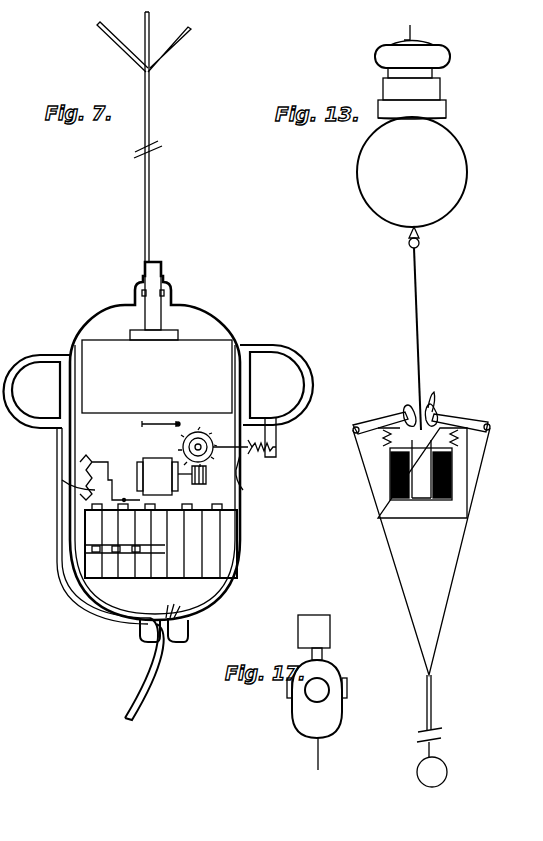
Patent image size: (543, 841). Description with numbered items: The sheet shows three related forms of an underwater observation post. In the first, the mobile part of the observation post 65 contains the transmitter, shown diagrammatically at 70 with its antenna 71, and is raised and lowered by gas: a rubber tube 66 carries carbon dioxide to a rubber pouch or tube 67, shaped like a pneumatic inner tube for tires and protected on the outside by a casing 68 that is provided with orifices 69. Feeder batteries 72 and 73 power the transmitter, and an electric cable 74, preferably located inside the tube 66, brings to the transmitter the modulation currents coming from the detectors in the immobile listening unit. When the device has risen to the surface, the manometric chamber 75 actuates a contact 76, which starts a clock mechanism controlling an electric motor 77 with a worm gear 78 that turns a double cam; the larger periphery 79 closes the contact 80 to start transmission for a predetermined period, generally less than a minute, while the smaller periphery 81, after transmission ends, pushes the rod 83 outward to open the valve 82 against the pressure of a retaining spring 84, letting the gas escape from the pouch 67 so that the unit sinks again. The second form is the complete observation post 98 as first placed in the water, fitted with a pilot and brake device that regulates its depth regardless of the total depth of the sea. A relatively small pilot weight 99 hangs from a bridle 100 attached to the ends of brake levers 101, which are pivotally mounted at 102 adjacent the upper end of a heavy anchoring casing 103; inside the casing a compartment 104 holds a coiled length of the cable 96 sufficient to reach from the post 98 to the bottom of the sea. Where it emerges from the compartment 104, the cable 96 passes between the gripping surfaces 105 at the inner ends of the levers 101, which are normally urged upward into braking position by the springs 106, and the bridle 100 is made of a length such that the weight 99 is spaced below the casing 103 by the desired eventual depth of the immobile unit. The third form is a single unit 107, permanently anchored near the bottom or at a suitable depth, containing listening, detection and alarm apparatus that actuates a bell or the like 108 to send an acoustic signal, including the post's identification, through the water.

In FIG. 7, the mobile part of the observation post 65 is at (203, 313).
In FIG. 7, the rubber tube 66 is at (132, 672).
In FIG. 7, the rubber pouch or tube 67 is at (40, 418).
In FIG. 7, the casing 68 is at (20, 425).
In FIG. 7, the orifices 69 is at (276, 401).
In FIG. 7, the transmitter 70 is at (222, 348).
In FIG. 7, the antenna 71 is at (162, 216).
In FIG. 7, the feeder battery 72 is at (225, 572).
In FIG. 7, the feeder battery 73 is at (100, 572).
In FIG. 7, the electric cable 74 is at (188, 626).
In FIG. 7, the manometric chamber 75 is at (80, 478).
In FIG. 7, the contact 76 is at (70, 500).
In FIG. 7, the electric motor 77 is at (164, 476).
In FIG. 7, the worm gear 78 is at (200, 484).
In FIG. 7, the larger periphery of double cam 79 is at (207, 440).
In FIG. 7, the contact 80 is at (177, 423).
In FIG. 7, the smaller periphery of double cam 81 is at (182, 447).
In FIG. 7, the valve 82 is at (250, 458).
In FIG. 7, the rod 83 is at (245, 482).
In FIG. 7, the retaining spring 84 is at (276, 447).
In FIG. 13, the cable 96 is at (422, 328).
In FIG. 13, the observation post 98 is at (412, 126).
In FIG. 13, the pilot weight 99 is at (446, 762).
In FIG. 13, the bridle 100 is at (440, 602).
In FIG. 13, the brake levers 101 is at (378, 424).
In FIG. 13, the pivots 102 is at (406, 408).
In FIG. 13, the anchoring casing 103 is at (458, 510).
In FIG. 13, the compartment 104 is at (425, 500).
In FIG. 13, the gripping surfaces 105 is at (433, 394).
In FIG. 13, the springs 106 is at (388, 440).
In FIG. 17, the single unit 107 is at (322, 732).
In FIG. 17, the bell 108 is at (330, 632).